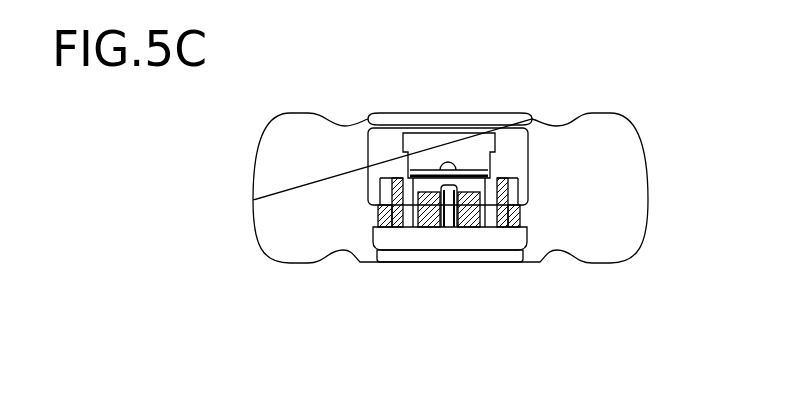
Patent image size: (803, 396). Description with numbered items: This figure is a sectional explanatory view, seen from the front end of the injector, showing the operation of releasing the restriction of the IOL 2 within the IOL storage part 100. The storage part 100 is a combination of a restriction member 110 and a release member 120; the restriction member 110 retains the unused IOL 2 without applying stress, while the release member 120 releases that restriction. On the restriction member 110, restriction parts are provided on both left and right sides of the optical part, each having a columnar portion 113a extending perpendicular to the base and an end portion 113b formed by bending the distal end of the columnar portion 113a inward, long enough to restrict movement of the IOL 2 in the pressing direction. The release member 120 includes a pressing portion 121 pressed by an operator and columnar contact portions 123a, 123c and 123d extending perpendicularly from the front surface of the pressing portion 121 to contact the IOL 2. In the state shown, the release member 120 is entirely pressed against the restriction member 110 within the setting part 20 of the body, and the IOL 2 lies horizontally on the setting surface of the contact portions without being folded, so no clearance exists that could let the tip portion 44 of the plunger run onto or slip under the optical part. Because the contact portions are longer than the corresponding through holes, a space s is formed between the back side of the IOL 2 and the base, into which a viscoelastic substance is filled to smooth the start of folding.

The IOL storage part 100 is at (644, 288).
The restriction member 110 is at (517, 222).
The release member 120 is at (520, 255).
The pressing portion 121 is at (397, 247).
The contact portion 123a is at (449, 205).
The contact portion 123c is at (430, 200).
The contact portion 123d is at (396, 186).
The columnar portion 113a is at (385, 210).
The end portion 113b is at (403, 147).
The setting part 20 is at (465, 140).
The IOL 2 is at (440, 168).
The tip portion 44 is at (446, 160).
The space s is at (472, 182).